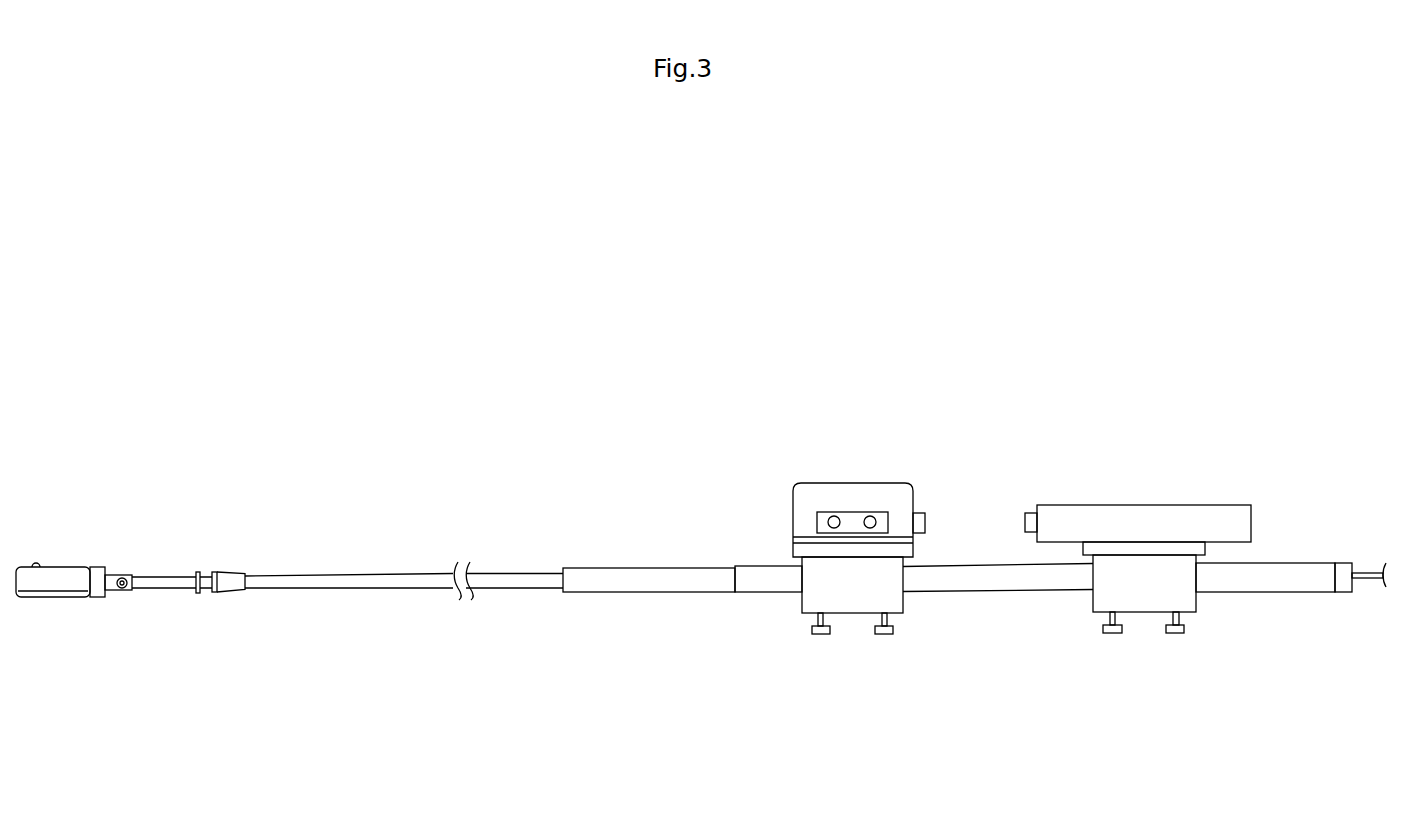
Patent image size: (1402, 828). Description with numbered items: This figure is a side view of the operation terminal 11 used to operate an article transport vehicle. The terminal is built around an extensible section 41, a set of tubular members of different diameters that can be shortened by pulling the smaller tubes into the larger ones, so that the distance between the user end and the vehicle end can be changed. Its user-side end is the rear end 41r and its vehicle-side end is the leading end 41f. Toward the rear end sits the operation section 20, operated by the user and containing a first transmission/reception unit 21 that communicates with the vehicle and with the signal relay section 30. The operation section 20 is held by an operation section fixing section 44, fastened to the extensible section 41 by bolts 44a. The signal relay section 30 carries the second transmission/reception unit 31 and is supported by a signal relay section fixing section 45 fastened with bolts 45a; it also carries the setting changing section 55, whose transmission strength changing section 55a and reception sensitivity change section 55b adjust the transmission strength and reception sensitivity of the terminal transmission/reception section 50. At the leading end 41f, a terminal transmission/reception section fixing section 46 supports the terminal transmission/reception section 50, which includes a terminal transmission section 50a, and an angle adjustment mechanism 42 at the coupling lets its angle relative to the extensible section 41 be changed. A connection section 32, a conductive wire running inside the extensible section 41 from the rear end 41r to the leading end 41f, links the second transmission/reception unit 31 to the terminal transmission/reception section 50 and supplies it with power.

The operation terminal 11 is at (738, 282).
The operation section 20 is at (1148, 518).
The first transmission/reception unit 21 is at (1030, 513).
The signal relay section 30 is at (808, 483).
The second transmission/reception unit 31 is at (926, 523).
The connection section 32 is at (1358, 581).
The extensible section 41 is at (654, 584).
The leading end 41f is at (92, 507).
The rear end 41r is at (1340, 548).
The angle adjustment mechanism 42 is at (121, 591).
The operation section fixing section 44 is at (1097, 603).
The bolts 44a is at (1112, 636).
The signal relay section fixing section 45 is at (808, 603).
The bolts 45a is at (822, 636).
The terminal transmission/reception section fixing section 46 is at (97, 567).
The terminal transmission/reception section 50 is at (60, 584).
The terminal transmission section 50a is at (36, 563).
The setting changing section 55 is at (818, 522).
The transmission strength changing section 55a is at (834, 516).
The reception sensitivity change section 55b is at (870, 516).